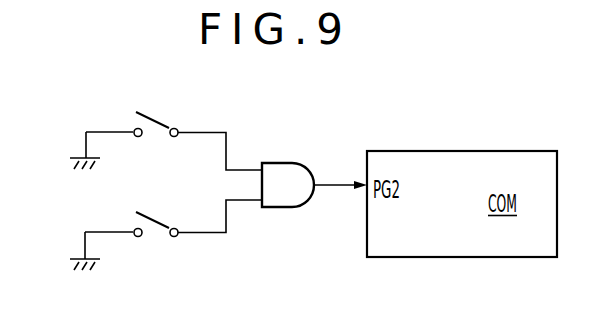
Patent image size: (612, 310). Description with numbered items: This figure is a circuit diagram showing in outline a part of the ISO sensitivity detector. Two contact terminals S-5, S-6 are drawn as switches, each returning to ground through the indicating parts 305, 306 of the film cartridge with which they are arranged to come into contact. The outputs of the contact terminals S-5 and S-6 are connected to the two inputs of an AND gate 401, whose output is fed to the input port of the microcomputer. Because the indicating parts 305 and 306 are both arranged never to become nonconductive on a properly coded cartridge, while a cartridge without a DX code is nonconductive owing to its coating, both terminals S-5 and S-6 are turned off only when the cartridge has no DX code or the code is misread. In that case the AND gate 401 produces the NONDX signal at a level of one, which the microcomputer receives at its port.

The indicating part 305 is at (67, 150).
The indicating part 306 is at (67, 251).
The AND gate 401 is at (281, 207).
The contact terminal S-5 is at (161, 125).
The contact terminal S-6 is at (161, 225).